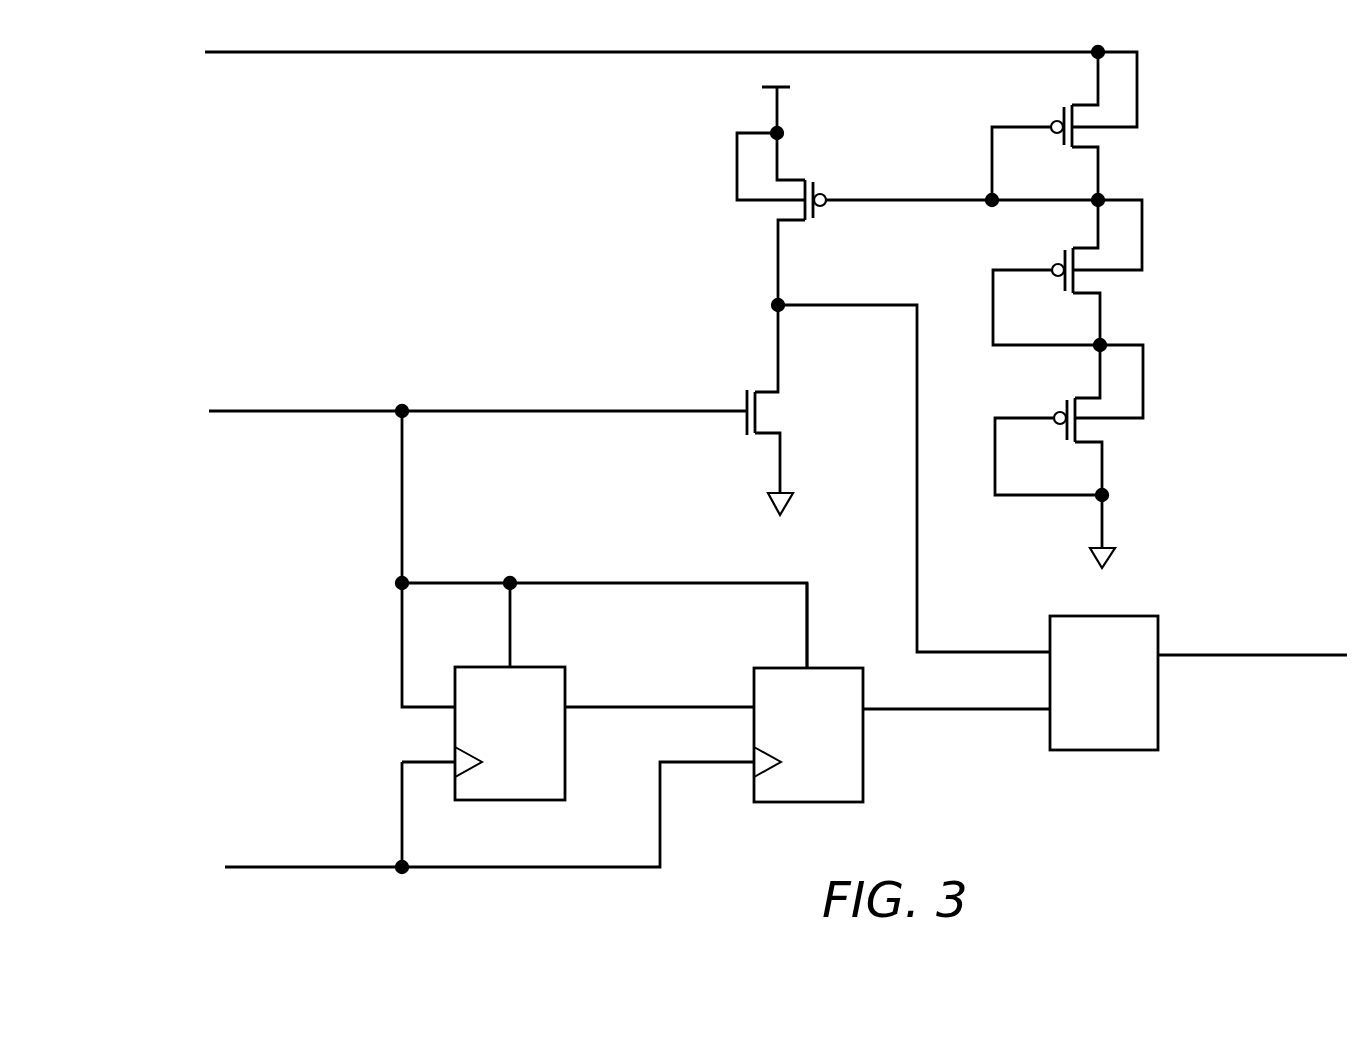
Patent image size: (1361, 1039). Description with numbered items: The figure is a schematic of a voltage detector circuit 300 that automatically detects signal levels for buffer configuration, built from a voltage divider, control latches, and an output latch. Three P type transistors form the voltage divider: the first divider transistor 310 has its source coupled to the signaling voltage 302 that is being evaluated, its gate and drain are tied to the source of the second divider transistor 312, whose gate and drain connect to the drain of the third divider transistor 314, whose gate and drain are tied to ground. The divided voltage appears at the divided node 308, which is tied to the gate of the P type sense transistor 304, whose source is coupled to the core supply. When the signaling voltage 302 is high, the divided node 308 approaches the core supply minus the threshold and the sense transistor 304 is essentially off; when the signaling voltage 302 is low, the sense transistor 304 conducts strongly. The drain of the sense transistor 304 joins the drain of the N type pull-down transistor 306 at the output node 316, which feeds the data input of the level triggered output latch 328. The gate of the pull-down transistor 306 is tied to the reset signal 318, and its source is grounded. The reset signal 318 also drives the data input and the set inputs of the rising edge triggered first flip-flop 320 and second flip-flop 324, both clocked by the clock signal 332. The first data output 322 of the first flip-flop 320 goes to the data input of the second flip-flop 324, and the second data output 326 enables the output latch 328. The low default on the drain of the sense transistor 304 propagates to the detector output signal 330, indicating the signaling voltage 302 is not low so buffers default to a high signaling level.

The voltage detector circuit 300 is at (445, 272).
The VDDQ 302 is at (400, 52).
The transistor T1 304 is at (772, 213).
The transistor T2 306 is at (738, 400).
The node 308 is at (910, 200).
The transistor T3 310 is at (1143, 135).
The transistor T4 312 is at (1146, 280).
The transistor T5 314 is at (1110, 428).
The node 316 is at (917, 473).
The reset signal RESET 318 is at (348, 411).
The flip-flop U1 320 is at (540, 667).
The data output 322 is at (680, 707).
The flip-flop U2 324 is at (780, 668).
The data output 326 is at (965, 710).
The output latch U3 328 is at (1073, 616).
The LOW_VDDQ signal 330 is at (1215, 656).
The clock signal CLOCK 332 is at (375, 867).